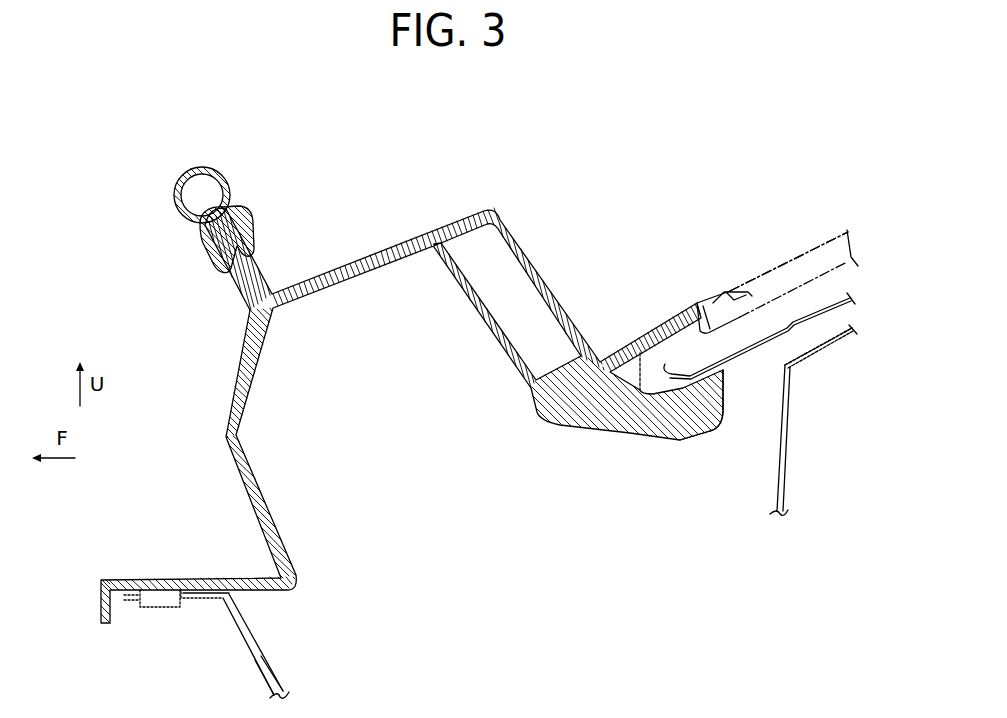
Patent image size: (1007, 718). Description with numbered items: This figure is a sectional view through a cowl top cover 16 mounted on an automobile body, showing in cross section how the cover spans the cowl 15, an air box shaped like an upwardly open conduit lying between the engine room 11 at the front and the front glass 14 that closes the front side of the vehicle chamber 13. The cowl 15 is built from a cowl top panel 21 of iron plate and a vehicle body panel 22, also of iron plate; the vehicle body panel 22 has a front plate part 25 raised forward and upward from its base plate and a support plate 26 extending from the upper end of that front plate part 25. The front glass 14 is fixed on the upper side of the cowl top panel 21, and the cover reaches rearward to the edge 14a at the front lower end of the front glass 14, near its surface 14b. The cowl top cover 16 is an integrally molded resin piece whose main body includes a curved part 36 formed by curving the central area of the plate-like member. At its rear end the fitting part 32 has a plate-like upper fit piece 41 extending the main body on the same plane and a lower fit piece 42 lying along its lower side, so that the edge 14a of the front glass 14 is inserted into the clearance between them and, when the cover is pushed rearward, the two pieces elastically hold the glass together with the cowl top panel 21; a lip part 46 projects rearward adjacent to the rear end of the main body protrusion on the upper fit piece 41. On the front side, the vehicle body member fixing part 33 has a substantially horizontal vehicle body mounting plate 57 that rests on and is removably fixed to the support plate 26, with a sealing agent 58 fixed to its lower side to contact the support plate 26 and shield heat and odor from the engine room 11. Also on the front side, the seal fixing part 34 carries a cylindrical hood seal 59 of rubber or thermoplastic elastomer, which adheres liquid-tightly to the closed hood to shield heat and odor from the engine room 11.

The engine room 11 is at (163, 499).
The vehicle chamber 13 is at (837, 413).
The front glass 14 is at (827, 243).
The edge 14a is at (697, 303).
The upper surface of side frame 14b is at (780, 271).
The cowl 15 is at (690, 565).
The cowl top cover 16 is at (478, 203).
The cowl top panel 21 is at (787, 452).
The vehicle body panel 22 is at (267, 680).
The front plate part 25 is at (247, 650).
The support plate 26 is at (199, 603).
The fitting part 32 is at (713, 430).
The vehicle body member fixing part 33 is at (196, 580).
The seal fixing part 34 is at (246, 288).
The curved part 36 is at (377, 258).
The upper fit piece 41 is at (630, 348).
The lower fit piece 42 is at (648, 434).
The lip part 46 is at (736, 290).
The vehicle body mounting plate 57 is at (122, 580).
The sealing agent 58 is at (155, 610).
The hood seal 59 is at (206, 168).